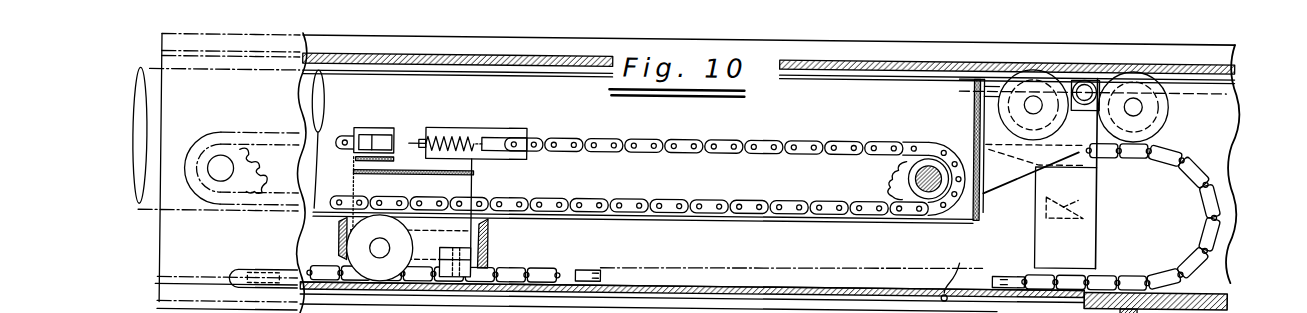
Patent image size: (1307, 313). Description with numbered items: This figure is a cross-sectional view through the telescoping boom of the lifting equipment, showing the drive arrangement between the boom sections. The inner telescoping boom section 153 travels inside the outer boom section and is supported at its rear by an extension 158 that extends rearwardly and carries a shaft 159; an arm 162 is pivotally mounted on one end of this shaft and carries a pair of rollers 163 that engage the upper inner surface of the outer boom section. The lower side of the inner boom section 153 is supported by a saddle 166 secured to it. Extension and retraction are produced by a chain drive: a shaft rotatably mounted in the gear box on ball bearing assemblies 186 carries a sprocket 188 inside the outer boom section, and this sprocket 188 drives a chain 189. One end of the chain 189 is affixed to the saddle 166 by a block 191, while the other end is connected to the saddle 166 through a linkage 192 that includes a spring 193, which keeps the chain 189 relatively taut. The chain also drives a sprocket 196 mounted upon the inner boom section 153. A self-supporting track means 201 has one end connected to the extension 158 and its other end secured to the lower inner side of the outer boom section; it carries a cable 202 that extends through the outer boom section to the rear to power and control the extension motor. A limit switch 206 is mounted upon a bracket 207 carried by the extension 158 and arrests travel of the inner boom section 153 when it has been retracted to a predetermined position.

The inner telescoping boom section 153 is at (767, 124).
The extension 158 is at (1023, 165).
The shaft 159 is at (1086, 93).
The arm 162 is at (1146, 98).
The rollers 163 is at (1162, 109).
The saddle 166 is at (460, 223).
The ball bearing assemblies 186 is at (933, 160).
The sprocket 188 is at (893, 171).
The chain 189 is at (658, 132).
The block 191 is at (375, 129).
The linkage 192 is at (500, 128).
The spring 193 is at (447, 134).
The sprocket 196 is at (262, 192).
The self-supporting track means 201 is at (1240, 153).
The cable 202 is at (240, 268).
The limit switch 206 is at (1070, 192).
The bracket 207 is at (1053, 234).